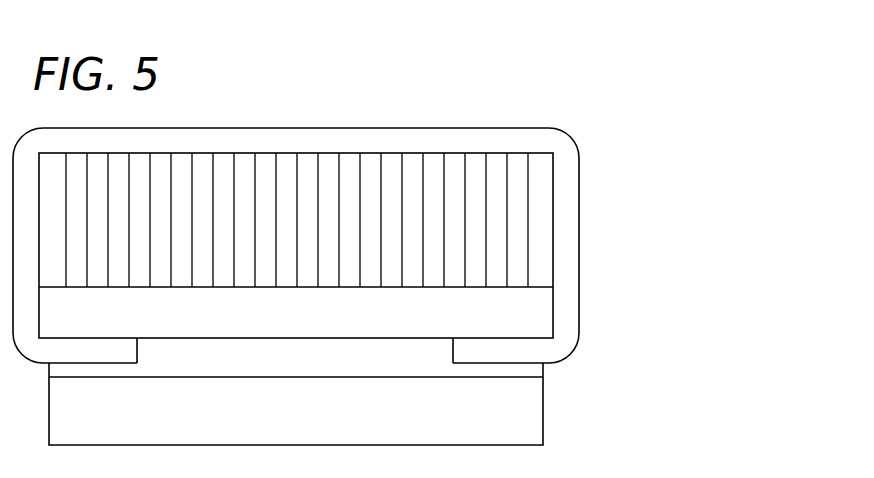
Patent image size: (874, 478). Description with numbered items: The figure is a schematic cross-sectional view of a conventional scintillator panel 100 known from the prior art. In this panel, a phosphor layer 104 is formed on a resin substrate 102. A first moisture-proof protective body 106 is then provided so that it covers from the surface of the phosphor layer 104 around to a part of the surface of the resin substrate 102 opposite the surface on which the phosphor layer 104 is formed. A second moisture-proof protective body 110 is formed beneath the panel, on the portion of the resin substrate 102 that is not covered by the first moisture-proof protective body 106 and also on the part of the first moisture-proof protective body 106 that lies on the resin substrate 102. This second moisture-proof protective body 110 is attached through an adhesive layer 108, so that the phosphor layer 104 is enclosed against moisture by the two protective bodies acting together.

The scintillator panel 100 is at (687, 120).
The resin substrate 102 is at (537, 312).
The phosphor layer 104 is at (513, 228).
The first moisture-proof protective body 106 is at (577, 163).
The adhesive layer 108 is at (532, 372).
The second moisture-proof protective body 110 is at (527, 417).